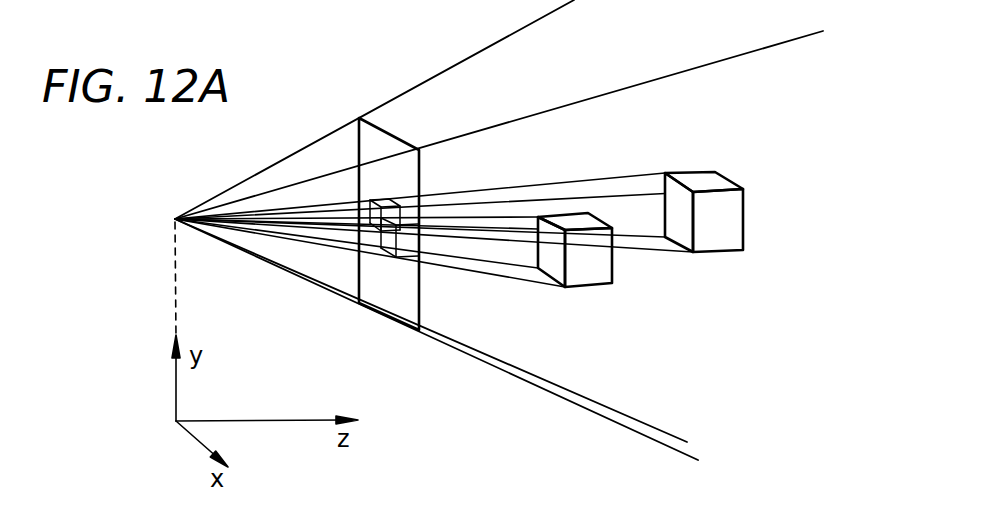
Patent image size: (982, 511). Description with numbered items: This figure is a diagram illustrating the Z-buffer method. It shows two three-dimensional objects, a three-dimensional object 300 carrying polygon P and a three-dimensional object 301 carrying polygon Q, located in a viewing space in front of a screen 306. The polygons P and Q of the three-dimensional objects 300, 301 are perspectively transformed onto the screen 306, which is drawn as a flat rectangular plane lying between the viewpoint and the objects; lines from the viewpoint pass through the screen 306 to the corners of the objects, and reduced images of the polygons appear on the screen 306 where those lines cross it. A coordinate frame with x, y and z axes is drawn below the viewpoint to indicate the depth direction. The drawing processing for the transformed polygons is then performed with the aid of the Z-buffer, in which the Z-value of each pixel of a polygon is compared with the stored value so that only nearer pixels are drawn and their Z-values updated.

The 3D object 300 is at (747, 198).
The 3D object 301 is at (615, 274).
The screen 306 is at (405, 143).